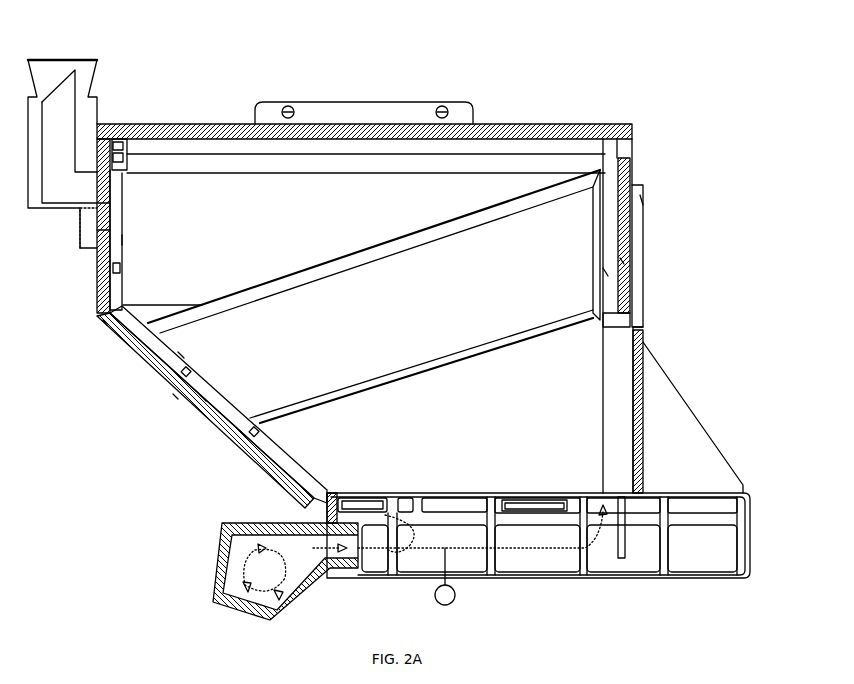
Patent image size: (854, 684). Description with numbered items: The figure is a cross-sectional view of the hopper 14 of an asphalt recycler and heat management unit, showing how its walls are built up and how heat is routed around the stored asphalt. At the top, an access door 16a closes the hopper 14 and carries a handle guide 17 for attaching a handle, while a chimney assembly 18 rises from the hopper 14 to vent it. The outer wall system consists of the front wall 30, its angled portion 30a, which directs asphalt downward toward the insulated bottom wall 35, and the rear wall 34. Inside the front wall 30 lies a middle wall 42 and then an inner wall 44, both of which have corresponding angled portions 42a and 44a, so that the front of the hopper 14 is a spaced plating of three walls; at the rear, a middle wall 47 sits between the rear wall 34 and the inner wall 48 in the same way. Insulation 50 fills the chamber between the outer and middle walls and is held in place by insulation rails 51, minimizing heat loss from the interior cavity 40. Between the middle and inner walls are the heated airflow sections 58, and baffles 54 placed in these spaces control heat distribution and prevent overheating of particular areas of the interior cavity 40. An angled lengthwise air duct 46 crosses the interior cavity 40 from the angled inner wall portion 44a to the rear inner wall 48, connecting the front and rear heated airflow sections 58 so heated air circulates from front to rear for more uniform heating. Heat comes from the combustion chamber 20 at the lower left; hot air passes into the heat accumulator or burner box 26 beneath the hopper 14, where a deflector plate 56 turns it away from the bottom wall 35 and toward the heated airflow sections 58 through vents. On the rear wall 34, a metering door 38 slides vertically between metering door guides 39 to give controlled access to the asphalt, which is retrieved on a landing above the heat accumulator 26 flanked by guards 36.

The hopper 14 is at (678, 178).
The access door 16a is at (530, 124).
The handle guide 17 is at (383, 104).
The chimney assembly 18 is at (68, 59).
The combustion chamber 20 is at (226, 606).
The heat accumulator 26 is at (670, 578).
The front wall 30 is at (97, 283).
The angled portion of front wall 30a is at (185, 402).
The rear wall 34 is at (628, 170).
The bottom wall 35 is at (430, 495).
The guard 36 is at (695, 443).
The metering door 38 is at (642, 380).
The metering door guide 39 is at (643, 310).
The interior cavity 40 is at (260, 223).
The middle wall 42 is at (110, 230).
The angled portion of middle wall 42a is at (203, 397).
The inner wall 44 is at (123, 238).
The angled portion of inner wall 44a is at (180, 355).
The air duct 46 is at (374, 296).
The middle wall 47 is at (640, 200).
The inner wall 48 is at (605, 272).
The insulation 50 is at (183, 124).
The insulation rail 51 is at (105, 322).
The baffle 54 is at (118, 272).
The deflector plate 56 is at (480, 496).
The heated airflow section 58 is at (115, 198).